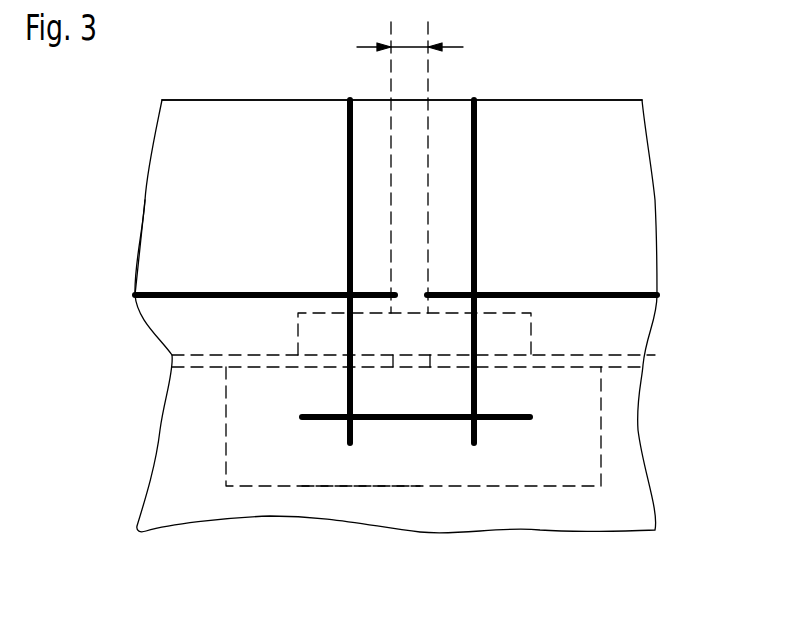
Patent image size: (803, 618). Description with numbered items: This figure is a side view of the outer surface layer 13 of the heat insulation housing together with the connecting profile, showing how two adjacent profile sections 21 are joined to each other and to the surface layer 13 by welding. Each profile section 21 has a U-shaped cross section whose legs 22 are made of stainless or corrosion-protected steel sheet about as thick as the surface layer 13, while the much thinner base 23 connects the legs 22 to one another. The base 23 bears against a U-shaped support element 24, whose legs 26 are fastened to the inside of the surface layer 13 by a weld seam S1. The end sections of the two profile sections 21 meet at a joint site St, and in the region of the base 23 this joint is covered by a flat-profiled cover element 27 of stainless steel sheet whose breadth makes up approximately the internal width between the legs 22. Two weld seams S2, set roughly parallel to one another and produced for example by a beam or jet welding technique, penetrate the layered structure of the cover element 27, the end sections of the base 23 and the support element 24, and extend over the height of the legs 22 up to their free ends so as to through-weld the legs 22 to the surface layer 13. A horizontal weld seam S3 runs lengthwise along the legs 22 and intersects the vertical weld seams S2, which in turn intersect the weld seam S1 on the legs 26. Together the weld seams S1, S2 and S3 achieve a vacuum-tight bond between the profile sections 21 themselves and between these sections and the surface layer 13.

The surface layer 13 is at (630, 152).
The profile section 21 is at (180, 192).
The leg 22 is at (205, 130).
The base 23 is at (165, 368).
The support element 24 is at (282, 490).
The leg 26 is at (343, 463).
The cover element 27 is at (531, 337).
The weld seam S1 is at (430, 419).
The weld seam S2 is at (349, 100).
The weld seam S3 is at (135, 295).
The joint site St is at (410, 163).